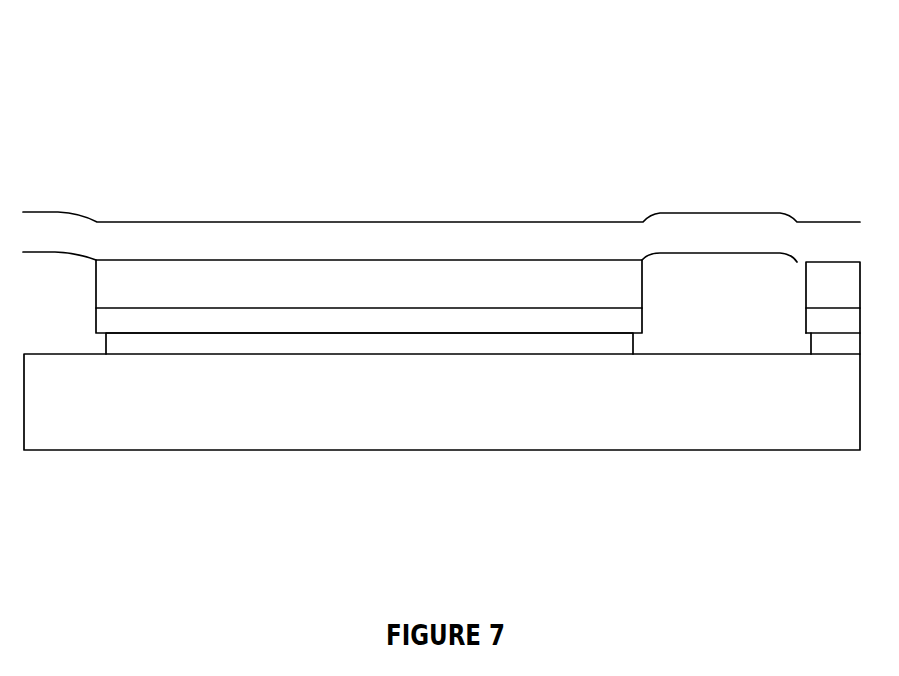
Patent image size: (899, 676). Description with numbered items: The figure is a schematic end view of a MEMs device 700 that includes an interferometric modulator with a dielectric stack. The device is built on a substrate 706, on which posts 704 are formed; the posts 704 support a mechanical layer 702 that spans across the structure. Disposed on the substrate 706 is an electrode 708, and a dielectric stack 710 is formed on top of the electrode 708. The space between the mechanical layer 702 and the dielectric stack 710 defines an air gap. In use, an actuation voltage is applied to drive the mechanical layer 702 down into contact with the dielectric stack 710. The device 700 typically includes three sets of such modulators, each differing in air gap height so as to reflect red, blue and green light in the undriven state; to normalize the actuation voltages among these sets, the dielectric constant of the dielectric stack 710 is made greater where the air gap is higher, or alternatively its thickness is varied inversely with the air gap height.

The MEMs device 700 is at (543, 130).
The mechanical layer 702 is at (521, 256).
The posts 704 is at (69, 322).
The substrate 706 is at (821, 428).
The electrode 708 is at (285, 340).
The dielectric stack 710 is at (523, 323).